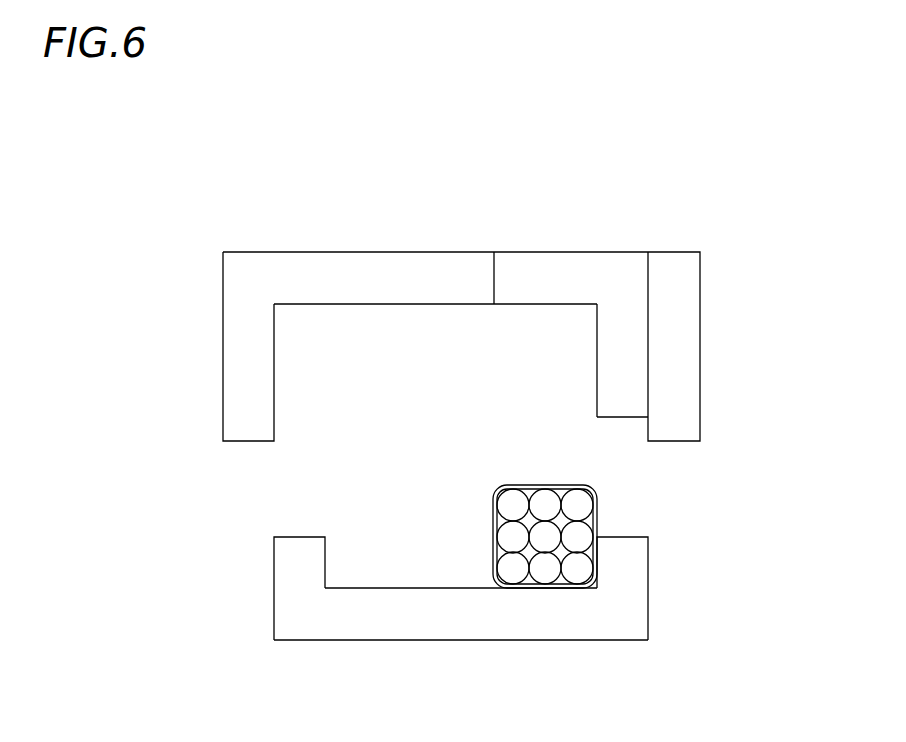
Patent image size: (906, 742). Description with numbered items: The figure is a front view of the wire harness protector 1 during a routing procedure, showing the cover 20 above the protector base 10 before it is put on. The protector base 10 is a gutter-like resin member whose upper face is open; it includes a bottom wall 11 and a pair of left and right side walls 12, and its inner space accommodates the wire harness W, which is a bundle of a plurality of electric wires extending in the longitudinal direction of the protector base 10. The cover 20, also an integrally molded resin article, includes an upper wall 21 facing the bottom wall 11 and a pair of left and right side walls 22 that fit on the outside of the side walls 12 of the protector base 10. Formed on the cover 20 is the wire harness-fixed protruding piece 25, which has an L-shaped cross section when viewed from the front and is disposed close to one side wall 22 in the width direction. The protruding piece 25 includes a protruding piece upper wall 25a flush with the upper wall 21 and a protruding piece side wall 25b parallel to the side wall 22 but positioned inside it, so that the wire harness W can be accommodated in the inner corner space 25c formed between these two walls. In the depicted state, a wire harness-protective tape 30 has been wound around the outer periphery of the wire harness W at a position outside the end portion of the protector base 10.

The wire harness protector 1 is at (120, 372).
The protector base 10 is at (425, 621).
The bottom wall 11 is at (449, 613).
The side walls 12 is at (298, 561).
The cover 20 is at (454, 305).
The upper wall 21 is at (377, 277).
The side walls 22 is at (246, 349).
The wire harness-fixed protruding piece 25 is at (629, 293).
The protruding piece upper wall 25a is at (553, 278).
The protruding piece side wall 25b is at (620, 348).
The inner corner space 25c is at (567, 333).
The wire harness-protective tape 30 is at (606, 530).
The wire harness W is at (577, 533).